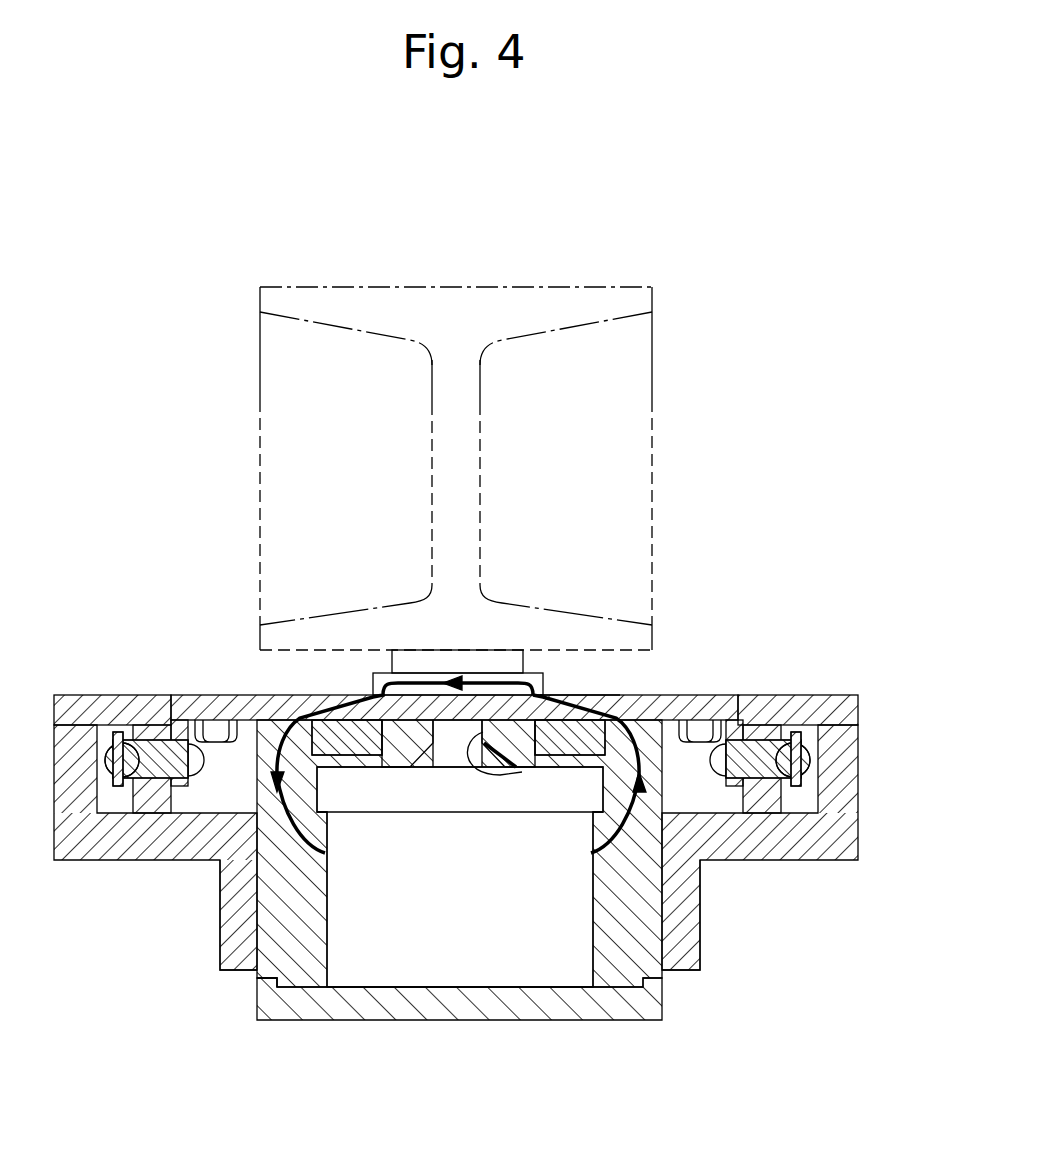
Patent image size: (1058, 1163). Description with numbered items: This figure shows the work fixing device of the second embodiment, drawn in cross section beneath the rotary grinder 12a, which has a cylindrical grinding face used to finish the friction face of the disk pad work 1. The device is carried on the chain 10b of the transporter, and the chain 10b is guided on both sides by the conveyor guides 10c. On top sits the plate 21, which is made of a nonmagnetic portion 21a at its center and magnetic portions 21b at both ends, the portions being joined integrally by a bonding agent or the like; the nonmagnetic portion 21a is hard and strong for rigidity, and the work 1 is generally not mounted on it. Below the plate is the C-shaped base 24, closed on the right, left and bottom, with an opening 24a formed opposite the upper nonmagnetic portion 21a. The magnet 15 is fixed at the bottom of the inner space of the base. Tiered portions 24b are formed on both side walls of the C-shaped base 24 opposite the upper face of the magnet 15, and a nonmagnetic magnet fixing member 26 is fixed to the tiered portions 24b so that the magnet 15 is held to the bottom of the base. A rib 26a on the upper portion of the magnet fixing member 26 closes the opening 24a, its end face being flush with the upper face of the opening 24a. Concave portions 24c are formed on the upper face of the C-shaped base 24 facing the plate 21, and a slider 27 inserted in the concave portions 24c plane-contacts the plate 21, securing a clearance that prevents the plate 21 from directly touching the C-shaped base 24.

The work 1 is at (455, 660).
The chain 10b is at (110, 696).
The conveyor guide 10c is at (83, 845).
The rotary grinder 12a is at (652, 378).
The magnet 15 is at (502, 963).
The plate 21 is at (298, 686).
The nonmagnetic portion 21a is at (573, 695).
The magnetic portion 21b is at (203, 696).
The C-shaped base 24 is at (430, 1003).
The opening 24a is at (562, 723).
The tiered portion 24b is at (318, 790).
The concave portion 24c is at (380, 743).
The magnet fixing member 26 is at (610, 993).
The rib 26a is at (446, 735).
The slider 27 is at (278, 696).